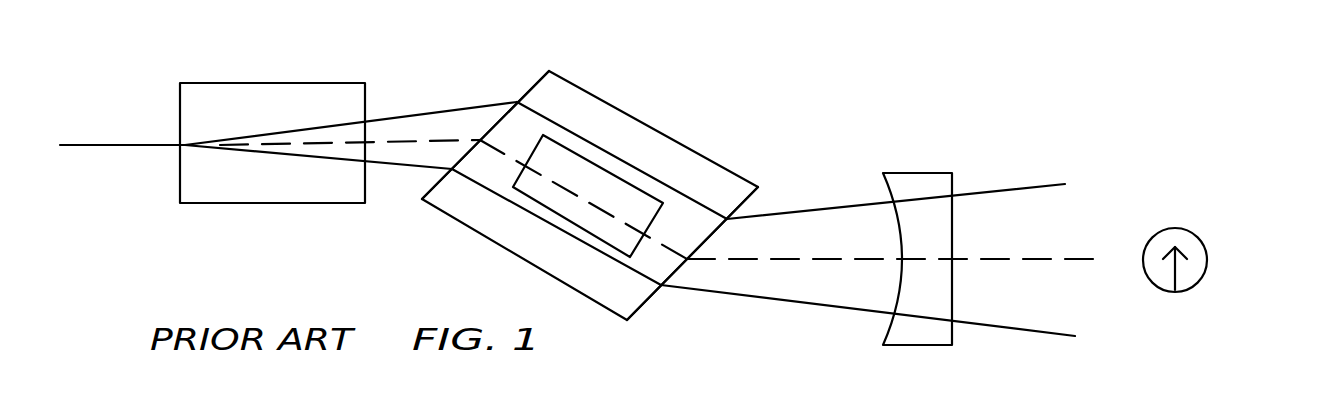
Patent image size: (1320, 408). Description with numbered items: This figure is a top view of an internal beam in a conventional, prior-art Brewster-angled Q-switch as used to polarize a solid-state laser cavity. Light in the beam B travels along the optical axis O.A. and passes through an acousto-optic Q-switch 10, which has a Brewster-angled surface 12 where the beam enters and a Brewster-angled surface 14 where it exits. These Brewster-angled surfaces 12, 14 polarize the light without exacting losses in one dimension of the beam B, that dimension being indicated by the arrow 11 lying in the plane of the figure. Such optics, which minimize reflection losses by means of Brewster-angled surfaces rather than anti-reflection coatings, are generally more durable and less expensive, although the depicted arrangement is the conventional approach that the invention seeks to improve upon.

The acousto-optic Q-switch 10 is at (482, 260).
The arrow 11 is at (1200, 233).
The Brewster-angled surface 12 is at (528, 95).
The Brewster-angled surface 14 is at (645, 303).
The beam B is at (431, 93).
The optical axis O.A. is at (810, 258).